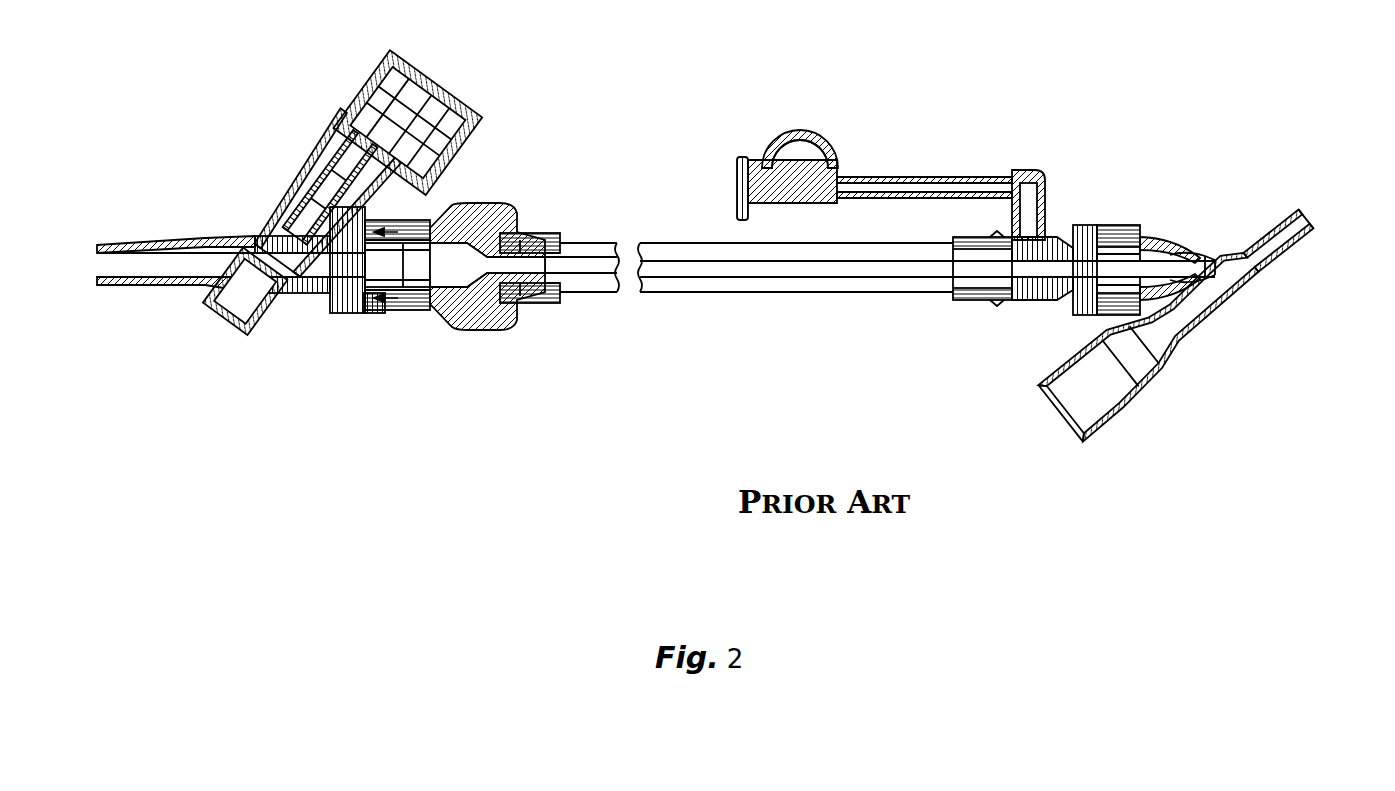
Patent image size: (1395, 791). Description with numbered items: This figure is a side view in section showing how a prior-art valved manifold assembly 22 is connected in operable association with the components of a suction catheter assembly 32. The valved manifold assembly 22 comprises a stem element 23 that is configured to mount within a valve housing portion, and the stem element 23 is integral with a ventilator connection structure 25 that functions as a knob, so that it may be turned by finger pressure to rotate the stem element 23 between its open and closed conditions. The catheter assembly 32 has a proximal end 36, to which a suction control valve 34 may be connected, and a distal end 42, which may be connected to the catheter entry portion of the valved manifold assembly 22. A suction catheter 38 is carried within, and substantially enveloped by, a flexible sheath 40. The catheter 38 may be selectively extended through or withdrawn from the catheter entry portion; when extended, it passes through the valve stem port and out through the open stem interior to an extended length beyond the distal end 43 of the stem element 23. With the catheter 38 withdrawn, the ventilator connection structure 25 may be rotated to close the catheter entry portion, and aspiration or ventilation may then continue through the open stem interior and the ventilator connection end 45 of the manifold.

The valved manifold assembly 22 is at (1201, 355).
The stem element 23 is at (1156, 338).
The ventilator connection structure 25 is at (1169, 354).
The catheter assembly 32 is at (664, 271).
The suction control valve 34 is at (280, 322).
The proximal end 36 is at (470, 330).
The suction catheter 38 is at (587, 257).
The flexible sheath 40 is at (677, 297).
The distal end 42 is at (1093, 220).
The distal end of stem element 43 is at (1279, 241).
The ventilator connection end 45 is at (1062, 411).